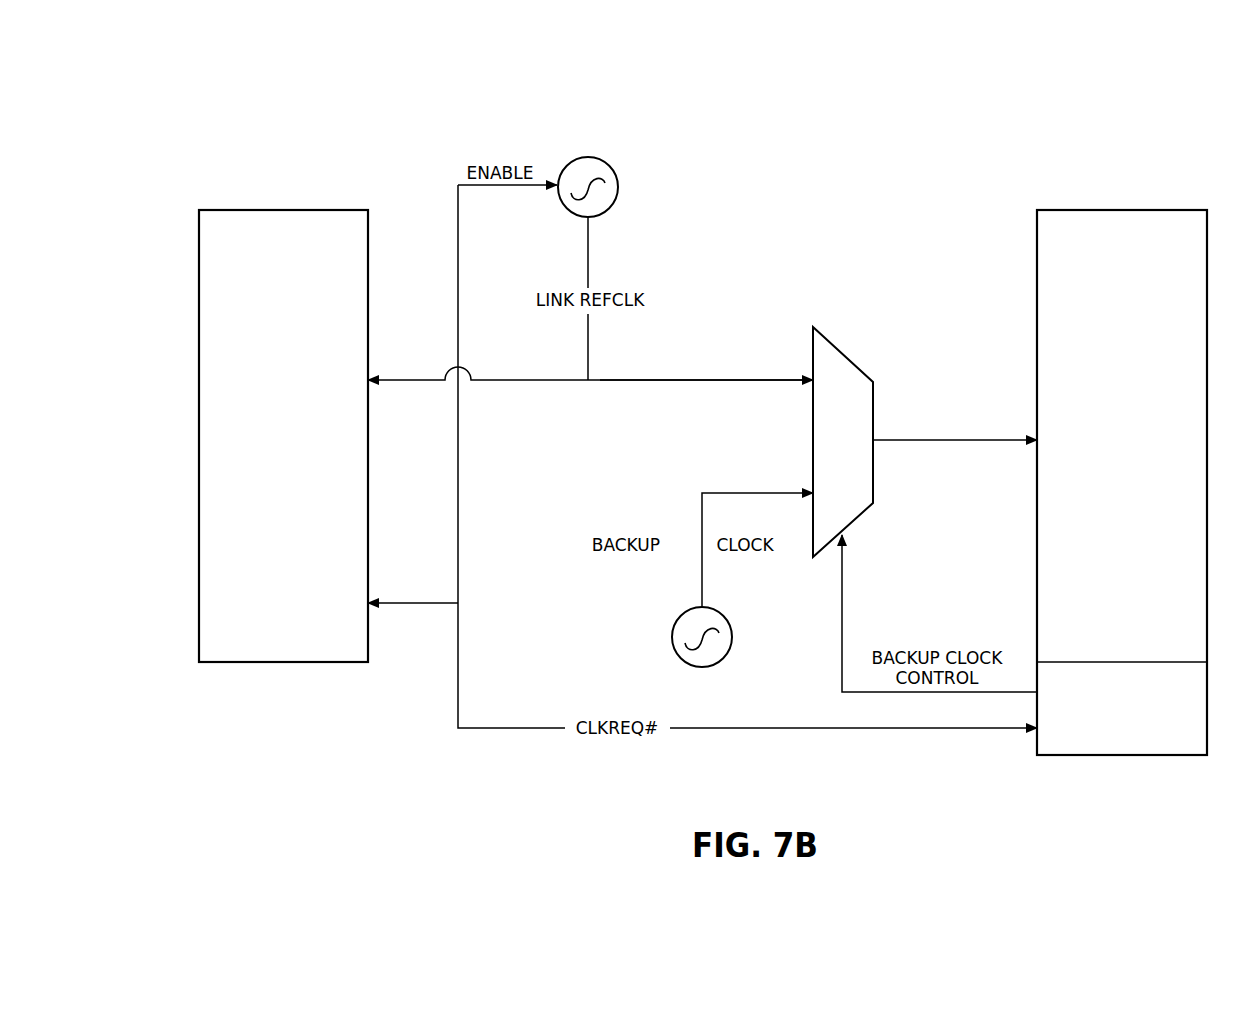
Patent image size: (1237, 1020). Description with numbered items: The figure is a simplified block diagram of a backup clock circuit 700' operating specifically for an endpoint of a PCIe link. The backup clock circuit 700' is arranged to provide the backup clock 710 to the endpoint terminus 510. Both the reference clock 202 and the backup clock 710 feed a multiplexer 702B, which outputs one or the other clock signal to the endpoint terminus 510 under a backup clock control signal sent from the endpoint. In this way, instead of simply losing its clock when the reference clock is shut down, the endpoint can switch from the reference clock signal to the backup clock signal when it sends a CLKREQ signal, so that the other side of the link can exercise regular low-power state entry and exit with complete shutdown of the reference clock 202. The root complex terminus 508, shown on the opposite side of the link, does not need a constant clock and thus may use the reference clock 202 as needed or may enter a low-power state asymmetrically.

The root complex terminus 508 is at (290, 210).
The endpoint terminus 510 is at (1123, 210).
The reference clock 202 is at (619, 181).
The multiplexer 702B is at (843, 350).
The backup clock 710 is at (672, 637).
The backup clock circuit 700' is at (1118, 57).